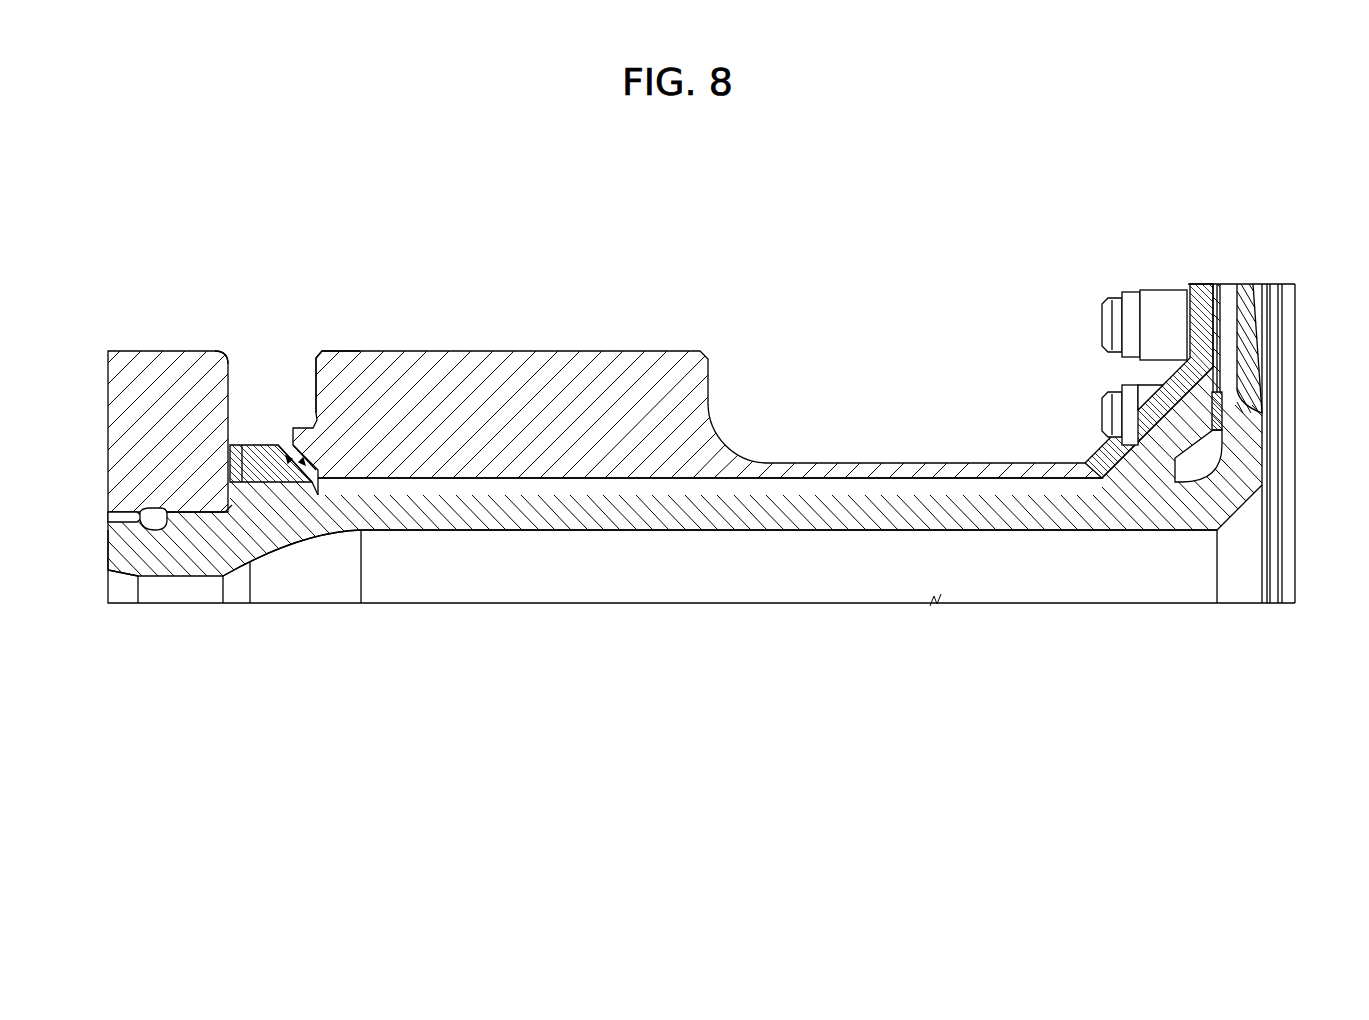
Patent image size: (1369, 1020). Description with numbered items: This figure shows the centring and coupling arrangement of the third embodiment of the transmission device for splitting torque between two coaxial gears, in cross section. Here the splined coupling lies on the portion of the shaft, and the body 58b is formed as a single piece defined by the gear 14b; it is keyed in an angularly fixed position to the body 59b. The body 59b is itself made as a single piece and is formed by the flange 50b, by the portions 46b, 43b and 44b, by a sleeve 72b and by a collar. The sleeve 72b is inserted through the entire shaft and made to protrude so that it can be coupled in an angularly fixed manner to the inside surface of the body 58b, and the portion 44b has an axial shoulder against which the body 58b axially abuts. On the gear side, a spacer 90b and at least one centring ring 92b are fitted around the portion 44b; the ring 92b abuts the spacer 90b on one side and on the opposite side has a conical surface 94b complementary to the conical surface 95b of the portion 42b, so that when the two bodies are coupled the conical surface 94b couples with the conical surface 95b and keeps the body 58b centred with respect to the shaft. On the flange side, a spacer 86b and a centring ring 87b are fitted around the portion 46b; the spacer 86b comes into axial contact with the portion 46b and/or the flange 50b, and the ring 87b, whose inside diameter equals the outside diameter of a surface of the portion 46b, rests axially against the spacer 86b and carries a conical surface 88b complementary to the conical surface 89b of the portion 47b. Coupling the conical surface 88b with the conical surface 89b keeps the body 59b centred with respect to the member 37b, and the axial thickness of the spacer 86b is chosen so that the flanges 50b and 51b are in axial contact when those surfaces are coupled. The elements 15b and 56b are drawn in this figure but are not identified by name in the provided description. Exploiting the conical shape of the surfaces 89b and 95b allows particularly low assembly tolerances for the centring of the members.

The gear 14b is at (128, 350).
The body 58b is at (222, 352).
The member 37b is at (322, 351).
The plate member 15b is at (506, 350).
The conical surface 94b is at (322, 425).
The spacer 90b is at (228, 456).
The sleeve 72b is at (167, 565).
The portion 44b is at (300, 560).
The centring ring 92b is at (278, 487).
The conical surface 95b is at (357, 530).
The portion 42b is at (533, 480).
The portion 43b is at (770, 532).
The body 59b is at (1100, 532).
The conical surface 89b is at (1140, 460).
The conical surface 88b is at (1112, 453).
The centring ring 87b is at (1185, 368).
The portion 47b is at (1137, 427).
The spacer 86b is at (1137, 290).
The upper bolt 56b is at (1165, 292).
The flange 51b is at (1190, 282).
The flange 50b is at (1250, 352).
The portion 46b is at (1208, 476).